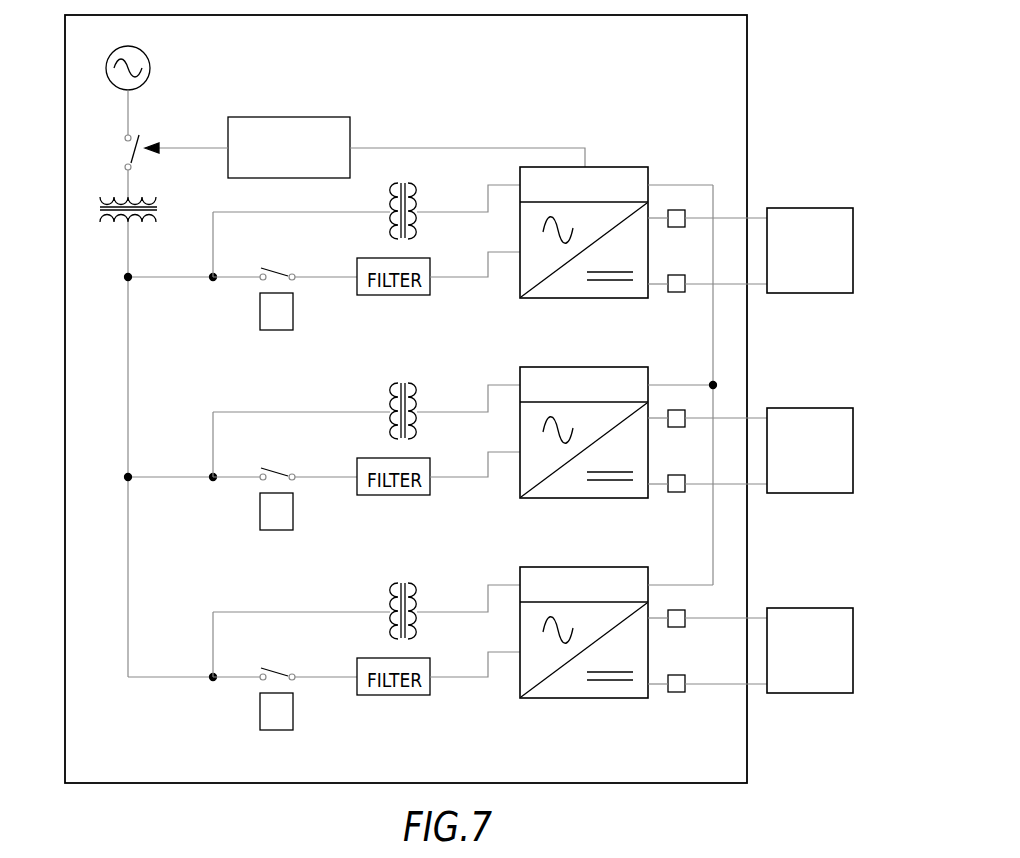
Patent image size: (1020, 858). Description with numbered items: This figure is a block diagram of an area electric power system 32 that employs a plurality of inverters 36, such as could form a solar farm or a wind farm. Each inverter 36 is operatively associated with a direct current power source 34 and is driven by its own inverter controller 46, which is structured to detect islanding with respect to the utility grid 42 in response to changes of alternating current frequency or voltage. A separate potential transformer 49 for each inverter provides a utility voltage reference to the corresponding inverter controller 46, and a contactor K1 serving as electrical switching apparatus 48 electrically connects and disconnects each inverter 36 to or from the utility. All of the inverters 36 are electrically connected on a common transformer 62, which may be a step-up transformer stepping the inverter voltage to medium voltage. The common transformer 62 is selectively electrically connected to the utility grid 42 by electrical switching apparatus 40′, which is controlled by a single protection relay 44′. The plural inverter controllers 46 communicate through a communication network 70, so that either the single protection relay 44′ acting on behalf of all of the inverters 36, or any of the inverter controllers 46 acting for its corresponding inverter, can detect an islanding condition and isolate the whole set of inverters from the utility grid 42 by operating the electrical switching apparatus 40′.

The area electric power system 32 is at (796, 62).
The utility grid 42 is at (150, 50).
The electrical switching apparatus 40′ is at (125, 152).
The protection relay 44′ is at (338, 117).
The transformer 62 is at (158, 200).
The potential transformer 49 is at (418, 188).
The electrical switching apparatus 48 is at (260, 318).
The inverter controller 46 is at (622, 165).
The inverter 36 is at (548, 299).
The direct current power source 34 is at (820, 208).
The communication network 70 is at (713, 333).